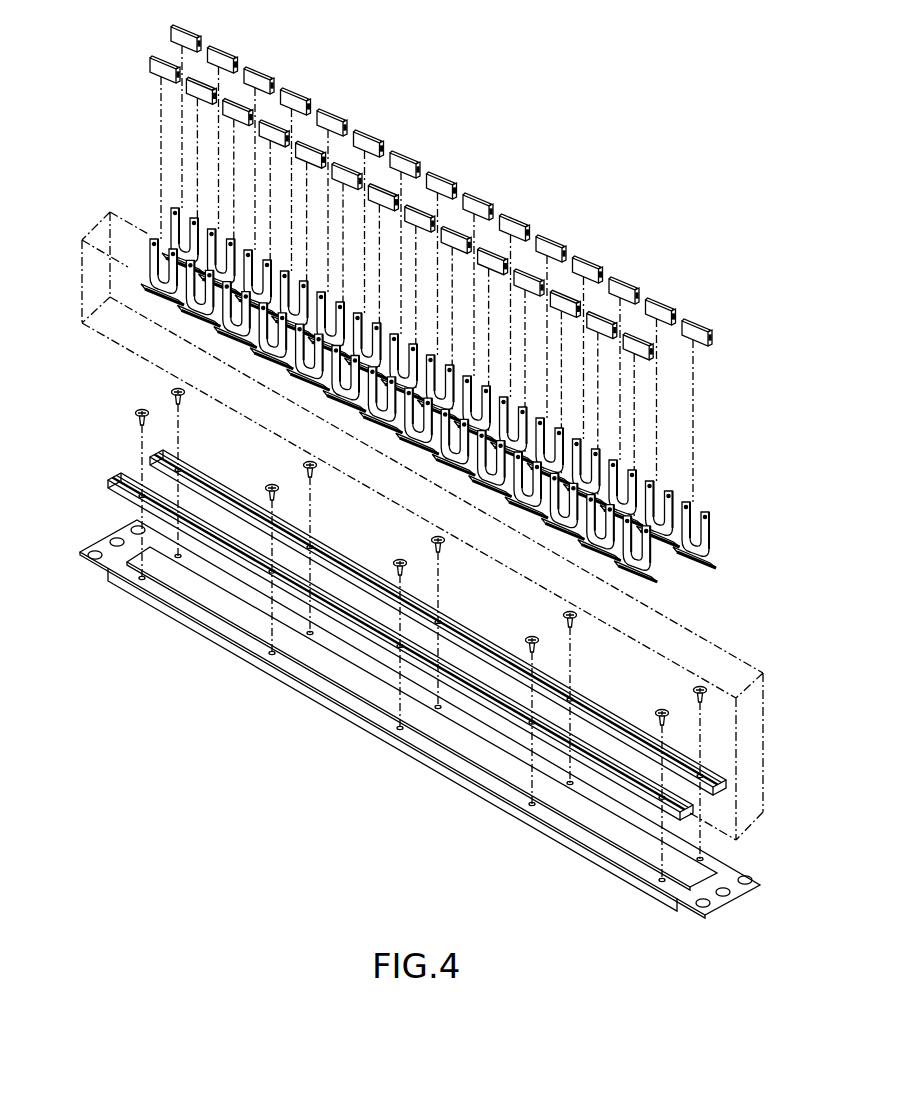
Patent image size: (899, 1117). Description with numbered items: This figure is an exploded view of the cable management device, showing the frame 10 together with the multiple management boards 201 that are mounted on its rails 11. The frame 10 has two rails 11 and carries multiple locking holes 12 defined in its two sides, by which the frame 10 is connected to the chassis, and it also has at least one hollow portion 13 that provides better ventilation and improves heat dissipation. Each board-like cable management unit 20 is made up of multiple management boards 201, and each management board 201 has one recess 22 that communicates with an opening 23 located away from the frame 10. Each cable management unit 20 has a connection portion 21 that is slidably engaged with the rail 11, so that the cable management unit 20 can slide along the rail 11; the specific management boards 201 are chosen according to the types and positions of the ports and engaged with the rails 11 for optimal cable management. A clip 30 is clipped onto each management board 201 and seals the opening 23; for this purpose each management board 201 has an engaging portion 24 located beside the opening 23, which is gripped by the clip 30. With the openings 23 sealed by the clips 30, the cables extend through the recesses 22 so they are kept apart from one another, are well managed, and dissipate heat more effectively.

The frame 10 is at (421, 756).
The rail 11 is at (403, 655).
The locking hole 12 is at (723, 892).
The hollow portion 13 is at (610, 825).
The cable management unit 20 is at (433, 420).
The management board 201 is at (157, 255).
The connection portion 21 is at (653, 572).
The recess 22 is at (708, 530).
The opening 23 is at (699, 503).
The engaging portion 24 is at (713, 521).
The clip 30 is at (338, 108).